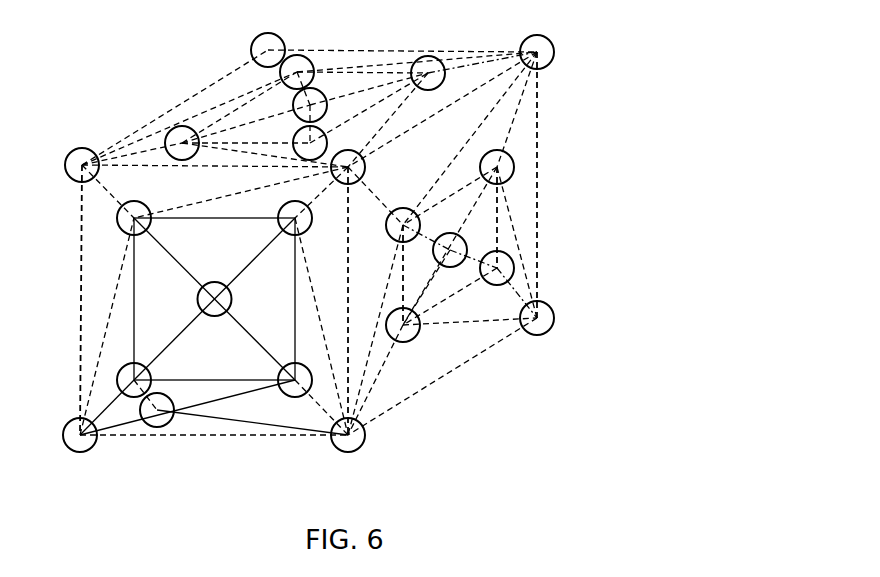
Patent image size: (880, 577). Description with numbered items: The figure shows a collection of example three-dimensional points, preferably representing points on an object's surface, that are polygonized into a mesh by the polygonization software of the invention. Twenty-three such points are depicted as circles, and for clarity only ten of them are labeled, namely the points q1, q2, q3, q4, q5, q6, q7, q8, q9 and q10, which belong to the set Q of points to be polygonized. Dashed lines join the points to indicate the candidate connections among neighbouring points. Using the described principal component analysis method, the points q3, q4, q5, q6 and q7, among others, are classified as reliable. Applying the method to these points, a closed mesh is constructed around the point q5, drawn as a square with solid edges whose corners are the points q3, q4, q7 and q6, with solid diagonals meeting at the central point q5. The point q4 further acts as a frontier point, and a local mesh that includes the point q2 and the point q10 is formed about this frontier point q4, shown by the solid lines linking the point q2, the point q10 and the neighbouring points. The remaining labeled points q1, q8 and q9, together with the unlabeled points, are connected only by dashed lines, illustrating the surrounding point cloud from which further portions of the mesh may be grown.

The example 3D point q1 is at (64, 165).
The example 3D point q2 is at (68, 450).
The reliable point q3 is at (144, 208).
The frontier point q4 is at (124, 372).
The central point of closed mesh q5 is at (215, 314).
The reliable point q6 is at (305, 226).
The reliable point q7 is at (299, 371).
The example 3D point q8 is at (366, 167).
The example 3D point q9 is at (358, 448).
The example 3D point q10 is at (158, 427).